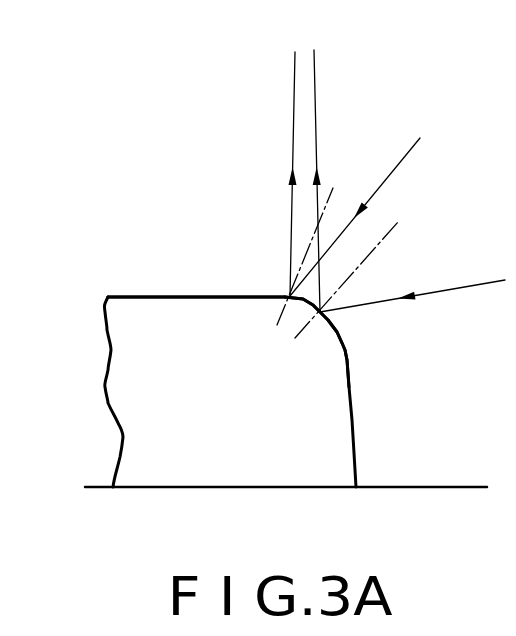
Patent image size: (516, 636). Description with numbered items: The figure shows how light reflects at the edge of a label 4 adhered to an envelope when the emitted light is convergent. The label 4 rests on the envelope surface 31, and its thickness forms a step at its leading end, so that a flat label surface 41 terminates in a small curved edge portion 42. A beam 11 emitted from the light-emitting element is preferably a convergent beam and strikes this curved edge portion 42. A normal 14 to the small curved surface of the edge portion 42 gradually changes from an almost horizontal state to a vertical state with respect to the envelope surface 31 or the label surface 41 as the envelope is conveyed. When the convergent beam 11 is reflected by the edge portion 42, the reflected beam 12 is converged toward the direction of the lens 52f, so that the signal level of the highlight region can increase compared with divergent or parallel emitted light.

The label 4 is at (188, 437).
The label surface 41 is at (212, 296).
The edge portion 42 is at (340, 330).
The envelope surface 31 is at (452, 486).
The beam 11 is at (398, 162).
The reflected beam 12 is at (292, 108).
The normal 14 is at (328, 200).
The lens 52f is at (296, 23).